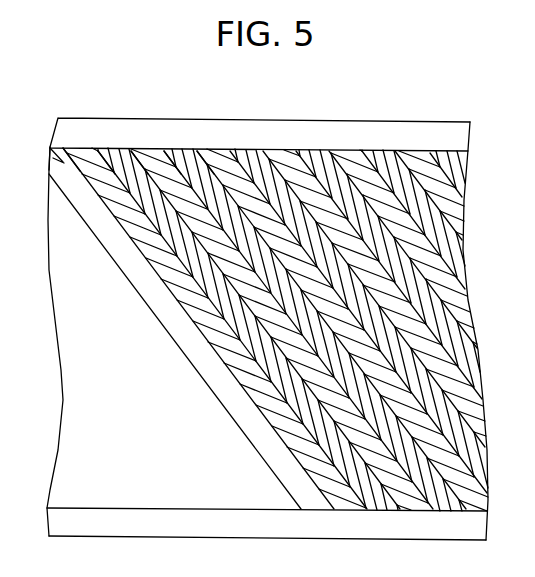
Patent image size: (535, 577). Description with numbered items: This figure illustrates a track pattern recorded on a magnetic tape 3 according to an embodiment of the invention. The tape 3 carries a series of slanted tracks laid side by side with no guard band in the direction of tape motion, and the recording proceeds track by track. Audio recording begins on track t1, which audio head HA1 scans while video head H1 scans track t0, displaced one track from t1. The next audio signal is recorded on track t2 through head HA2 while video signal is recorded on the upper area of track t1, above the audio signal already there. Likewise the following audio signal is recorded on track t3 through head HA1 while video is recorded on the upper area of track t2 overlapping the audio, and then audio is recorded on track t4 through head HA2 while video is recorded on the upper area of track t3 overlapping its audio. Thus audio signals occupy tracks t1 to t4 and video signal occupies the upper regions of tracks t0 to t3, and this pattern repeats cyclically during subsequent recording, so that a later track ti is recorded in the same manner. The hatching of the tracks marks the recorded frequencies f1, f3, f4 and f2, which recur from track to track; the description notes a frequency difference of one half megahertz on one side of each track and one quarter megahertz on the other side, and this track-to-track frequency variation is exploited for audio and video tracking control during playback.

The magnetic tape 3 is at (470, 122).
The track recorded with pilot frequency f1 is at (277, 329).
The track recorded with pilot frequency f2 is at (326, 330).
The track recorded with pilot frequency f3 is at (293, 329).
The track recorded with pilot frequency f4 is at (308, 329).
The track t0 is at (49, 148).
The track t1 is at (85, 148).
The track t2 is at (122, 150).
The track t3 is at (160, 150).
The track t4 is at (187, 150).
The time instant ti is at (222, 150).